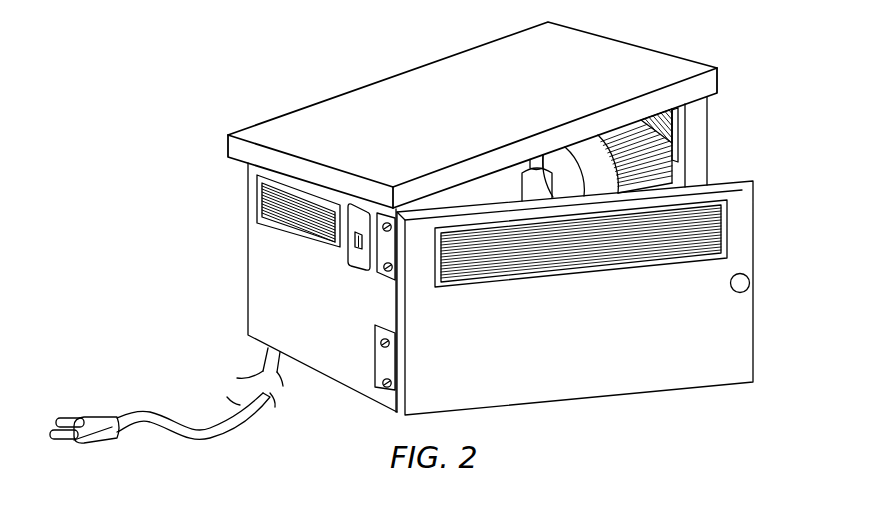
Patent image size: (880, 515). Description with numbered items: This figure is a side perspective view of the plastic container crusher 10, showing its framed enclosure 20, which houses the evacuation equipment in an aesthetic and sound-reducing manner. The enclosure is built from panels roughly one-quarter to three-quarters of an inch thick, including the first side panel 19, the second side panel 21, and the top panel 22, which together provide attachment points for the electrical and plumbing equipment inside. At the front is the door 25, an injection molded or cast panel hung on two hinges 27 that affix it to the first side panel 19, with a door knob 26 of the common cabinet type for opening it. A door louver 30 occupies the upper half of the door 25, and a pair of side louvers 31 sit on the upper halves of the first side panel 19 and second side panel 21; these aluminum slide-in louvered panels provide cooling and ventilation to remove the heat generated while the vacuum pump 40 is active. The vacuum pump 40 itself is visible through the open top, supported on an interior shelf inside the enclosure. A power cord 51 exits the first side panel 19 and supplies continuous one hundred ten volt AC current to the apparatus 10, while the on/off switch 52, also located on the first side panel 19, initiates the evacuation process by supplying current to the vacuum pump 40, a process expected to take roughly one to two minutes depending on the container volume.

The plastic container crusher 10 is at (437, 252).
The first side panel 19 is at (275, 307).
The framed enclosure 20 is at (479, 212).
The second side panel 21 is at (697, 163).
The top panel 22 is at (323, 130).
The door 25 is at (727, 355).
The door knob 26 is at (778, 294).
The hinges 27 is at (380, 258).
The door louver 30 is at (605, 247).
The side louvers 31 is at (273, 210).
The vacuum pump 40 is at (647, 150).
The power cord 51 is at (183, 435).
The on/off switch 52 is at (353, 268).